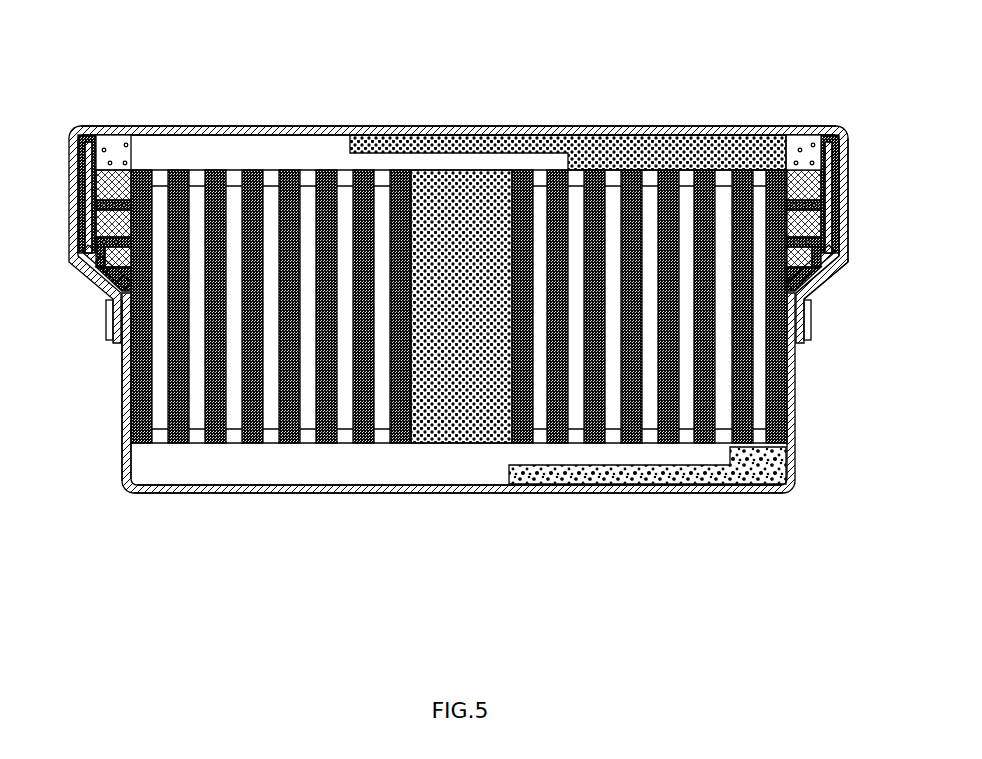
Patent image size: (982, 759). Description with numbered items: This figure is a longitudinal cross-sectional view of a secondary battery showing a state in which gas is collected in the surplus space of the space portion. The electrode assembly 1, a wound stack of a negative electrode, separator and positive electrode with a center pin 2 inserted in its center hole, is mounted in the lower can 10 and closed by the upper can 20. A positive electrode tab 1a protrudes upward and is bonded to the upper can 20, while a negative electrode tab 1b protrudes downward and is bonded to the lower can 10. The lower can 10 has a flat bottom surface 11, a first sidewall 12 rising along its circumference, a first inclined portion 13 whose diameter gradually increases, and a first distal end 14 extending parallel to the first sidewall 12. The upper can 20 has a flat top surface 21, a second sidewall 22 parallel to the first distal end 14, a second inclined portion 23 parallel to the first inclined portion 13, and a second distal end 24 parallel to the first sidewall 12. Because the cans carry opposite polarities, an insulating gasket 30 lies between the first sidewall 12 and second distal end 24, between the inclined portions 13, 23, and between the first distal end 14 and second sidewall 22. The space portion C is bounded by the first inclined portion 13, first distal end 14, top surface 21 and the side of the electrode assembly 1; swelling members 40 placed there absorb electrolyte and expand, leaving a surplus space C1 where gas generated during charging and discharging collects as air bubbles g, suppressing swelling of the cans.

The electrode assembly 1 is at (364, 190).
The positive electrode tab 1a is at (640, 150).
The negative electrode tab 1b is at (605, 476).
The center pin 2 is at (460, 190).
The lower can 10 is at (360, 504).
The bottom surface 11 is at (468, 491).
The first sidewall 12 is at (124, 372).
The first inclined portion 13 is at (95, 275).
The first distal end 14 is at (85, 180).
The upper can 20 is at (752, 102).
The top surface 21 is at (687, 131).
The second sidewall 22 is at (846, 182).
The second inclined portion 23 is at (822, 284).
The second distal end 24 is at (811, 331).
The gasket 30 is at (89, 210).
The swelling member 40 is at (829, 236).
The space portion C is at (115, 148).
The surplus space C1 is at (820, 245).
The air bubbles g is at (816, 262).